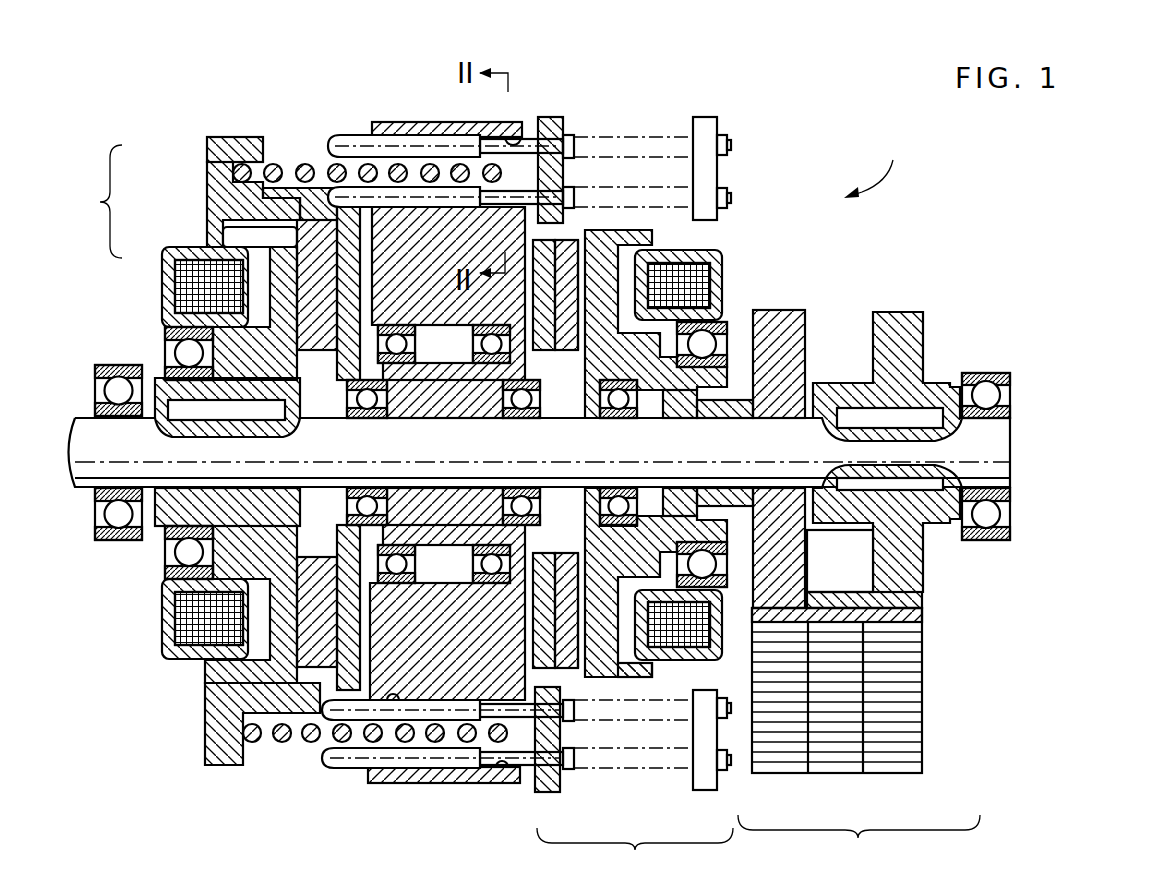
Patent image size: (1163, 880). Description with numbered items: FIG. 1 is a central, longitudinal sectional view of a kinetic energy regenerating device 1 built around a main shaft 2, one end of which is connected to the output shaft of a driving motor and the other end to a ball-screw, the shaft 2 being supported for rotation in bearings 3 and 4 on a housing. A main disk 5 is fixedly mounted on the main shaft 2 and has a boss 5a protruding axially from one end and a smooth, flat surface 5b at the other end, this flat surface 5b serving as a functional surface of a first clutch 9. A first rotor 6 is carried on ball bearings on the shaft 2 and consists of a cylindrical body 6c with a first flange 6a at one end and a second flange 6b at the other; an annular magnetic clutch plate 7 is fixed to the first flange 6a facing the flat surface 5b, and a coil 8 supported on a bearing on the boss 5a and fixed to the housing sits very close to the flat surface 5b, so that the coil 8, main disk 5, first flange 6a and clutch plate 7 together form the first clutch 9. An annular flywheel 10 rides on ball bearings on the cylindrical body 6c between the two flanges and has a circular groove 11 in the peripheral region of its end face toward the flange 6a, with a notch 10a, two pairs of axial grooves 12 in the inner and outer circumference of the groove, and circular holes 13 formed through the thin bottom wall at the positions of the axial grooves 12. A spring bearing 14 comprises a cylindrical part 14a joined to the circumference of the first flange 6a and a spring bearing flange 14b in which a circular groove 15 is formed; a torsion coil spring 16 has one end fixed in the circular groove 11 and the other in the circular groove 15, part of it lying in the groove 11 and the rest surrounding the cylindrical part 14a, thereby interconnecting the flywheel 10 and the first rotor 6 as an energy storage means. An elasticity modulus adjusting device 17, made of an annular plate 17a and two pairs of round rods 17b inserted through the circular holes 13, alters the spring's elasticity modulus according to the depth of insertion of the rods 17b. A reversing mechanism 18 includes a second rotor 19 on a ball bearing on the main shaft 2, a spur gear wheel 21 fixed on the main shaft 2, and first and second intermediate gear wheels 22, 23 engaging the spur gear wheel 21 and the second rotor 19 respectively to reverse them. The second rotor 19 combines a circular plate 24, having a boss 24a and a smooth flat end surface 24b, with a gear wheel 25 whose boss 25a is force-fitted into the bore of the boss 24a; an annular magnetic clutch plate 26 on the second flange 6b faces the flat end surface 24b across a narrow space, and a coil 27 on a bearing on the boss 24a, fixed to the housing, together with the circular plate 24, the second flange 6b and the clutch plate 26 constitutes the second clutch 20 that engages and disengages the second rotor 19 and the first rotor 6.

The kinetic energy regenerating device 1 is at (877, 164).
The main shaft 2 is at (80, 472).
The bearing 3 is at (113, 364).
The bearing 4 is at (988, 372).
The main disk 5 is at (165, 585).
The boss 5a is at (160, 540).
The flat surface 5b is at (285, 282).
The first rotor 6 is at (353, 283).
The first flange 6a is at (318, 232).
The second flange 6b is at (578, 700).
The cylindrical body 6c is at (460, 385).
The magnetic clutch plate 7 is at (300, 236).
The coil 8 is at (178, 285).
The first clutch 9 is at (100, 201).
The flywheel 10 is at (455, 122).
The notch 10a is at (512, 137).
The circular groove 11 is at (383, 150).
The axial grooves 12 is at (418, 136).
The circular holes 13 is at (530, 116).
The spring bearing 14 is at (280, 140).
The cylindrical part 14a is at (292, 188).
The spring bearing flange 14b is at (235, 137).
The circular groove 15 is at (245, 755).
The torsion coil spring 16 is at (283, 745).
The elasticity modulus adjusting device 17 is at (548, 117).
The annular plate 17a is at (566, 178).
The round rods 17b is at (342, 136).
The reversing mechanism 18 is at (859, 739).
The second rotor 19 is at (684, 398).
The second clutch 20 is at (635, 854).
The spur gear wheel 21 is at (925, 592).
The first intermediate gear wheel 22 is at (832, 750).
The second intermediate gear wheel 23 is at (897, 750).
The circular plate 24 is at (558, 548).
The boss 24a is at (648, 537).
The flat end surface 24b is at (600, 650).
The gear wheel 25 is at (750, 612).
The boss 25a is at (715, 412).
The magnetic clutch plate 26 is at (590, 680).
The coil 27 is at (665, 678).